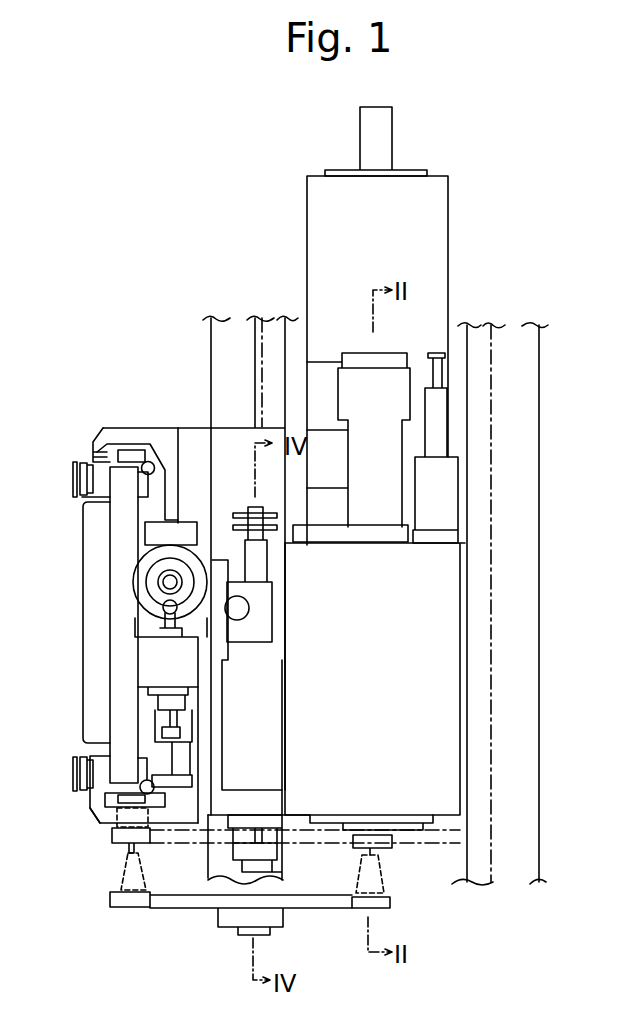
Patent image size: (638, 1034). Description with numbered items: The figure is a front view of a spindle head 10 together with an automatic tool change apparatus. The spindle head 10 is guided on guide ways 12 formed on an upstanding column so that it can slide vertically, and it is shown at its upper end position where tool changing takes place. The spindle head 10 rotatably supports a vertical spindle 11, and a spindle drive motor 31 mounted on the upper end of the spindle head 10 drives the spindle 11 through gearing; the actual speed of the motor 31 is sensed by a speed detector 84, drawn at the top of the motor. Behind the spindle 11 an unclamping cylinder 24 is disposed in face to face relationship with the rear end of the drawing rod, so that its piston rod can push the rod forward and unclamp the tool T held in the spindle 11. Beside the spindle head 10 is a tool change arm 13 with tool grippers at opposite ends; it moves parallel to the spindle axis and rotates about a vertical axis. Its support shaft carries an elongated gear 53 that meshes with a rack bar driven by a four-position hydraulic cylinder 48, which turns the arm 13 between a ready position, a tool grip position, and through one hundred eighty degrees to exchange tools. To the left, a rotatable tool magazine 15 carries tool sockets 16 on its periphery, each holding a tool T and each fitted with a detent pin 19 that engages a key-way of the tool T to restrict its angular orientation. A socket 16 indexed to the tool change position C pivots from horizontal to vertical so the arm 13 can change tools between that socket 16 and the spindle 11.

The spindle head 10 is at (457, 714).
The spindle 11 is at (395, 828).
The guide ways 12 is at (463, 863).
The tool change arm 13 is at (272, 833).
The tool magazine 15 is at (127, 417).
The tool socket 16 is at (97, 470).
The detent pin 19 is at (87, 500).
The unclamping cylinder 24 is at (392, 375).
The spindle drive motor 31 is at (437, 235).
The hydraulic cylinder 48 is at (254, 655).
The elongated gear 53 is at (258, 568).
The speed detector 84 is at (385, 148).
The tool T is at (73, 480).
The tool change position C is at (79, 823).